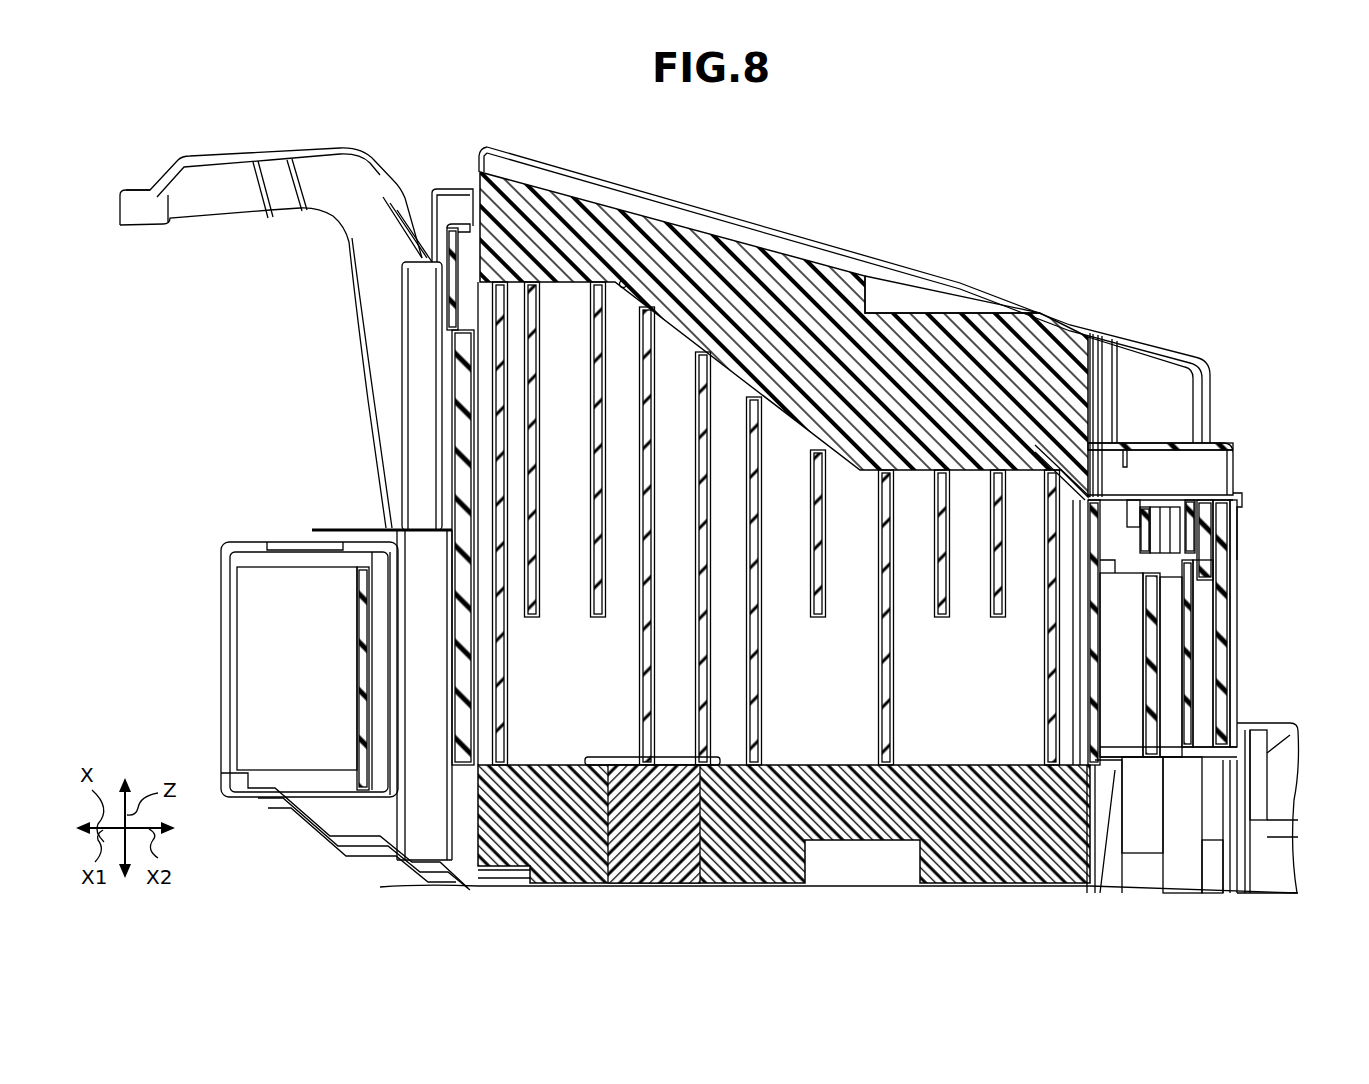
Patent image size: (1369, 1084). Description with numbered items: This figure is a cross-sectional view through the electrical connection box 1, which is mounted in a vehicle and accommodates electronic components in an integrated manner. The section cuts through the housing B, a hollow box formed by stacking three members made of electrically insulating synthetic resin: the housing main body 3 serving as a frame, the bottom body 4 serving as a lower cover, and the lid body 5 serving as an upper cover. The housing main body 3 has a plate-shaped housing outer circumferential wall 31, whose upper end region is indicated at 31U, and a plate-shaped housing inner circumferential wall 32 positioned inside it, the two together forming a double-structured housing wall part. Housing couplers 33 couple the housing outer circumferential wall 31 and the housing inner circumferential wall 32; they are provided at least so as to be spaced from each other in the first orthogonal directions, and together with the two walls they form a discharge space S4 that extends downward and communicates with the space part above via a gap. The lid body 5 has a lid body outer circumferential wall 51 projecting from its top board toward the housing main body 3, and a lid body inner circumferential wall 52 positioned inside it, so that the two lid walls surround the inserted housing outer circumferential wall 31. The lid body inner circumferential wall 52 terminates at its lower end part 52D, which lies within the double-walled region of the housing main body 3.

The electrical connection box 1 is at (402, 113).
The housing B is at (498, 124).
The housing main body 3 is at (1250, 683).
The bottom body 4 is at (765, 893).
The lid body 5 is at (803, 233).
The housing outer circumferential wall 31 is at (455, 383).
The upper end of side wall 31U is at (470, 227).
The housing inner circumferential wall 32 is at (553, 735).
The housing couplers 33 is at (638, 590).
The lid body outer circumferential wall 51 is at (447, 332).
The lid body inner circumferential wall 52 is at (905, 322).
The lower end part 52D is at (623, 280).
The discharge space S4 is at (562, 292).